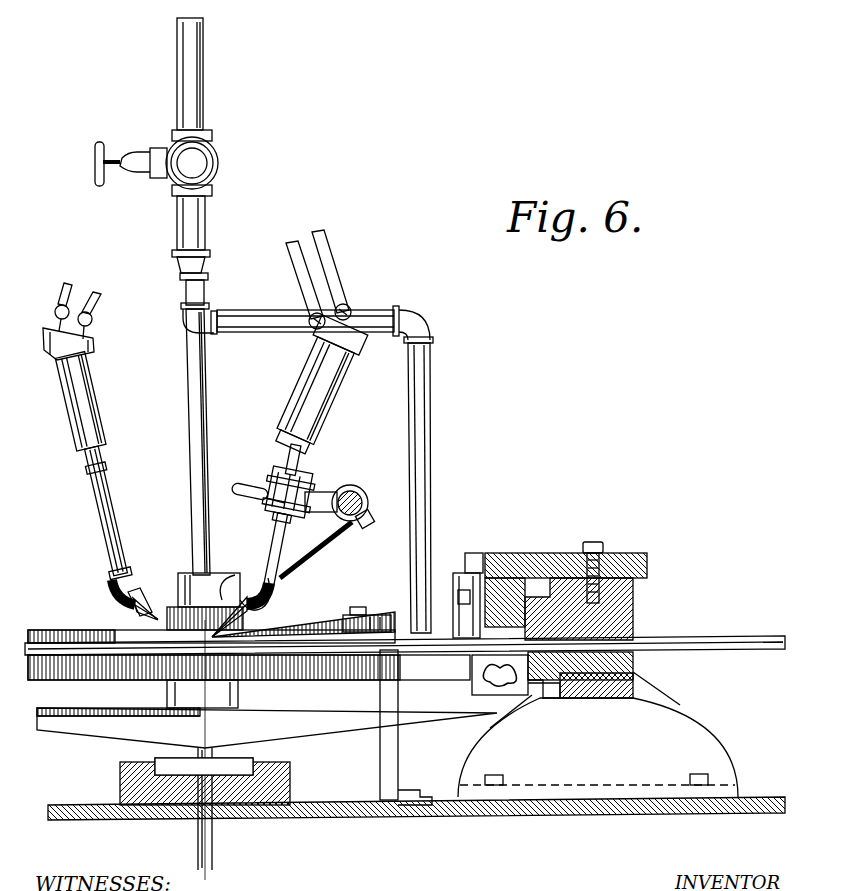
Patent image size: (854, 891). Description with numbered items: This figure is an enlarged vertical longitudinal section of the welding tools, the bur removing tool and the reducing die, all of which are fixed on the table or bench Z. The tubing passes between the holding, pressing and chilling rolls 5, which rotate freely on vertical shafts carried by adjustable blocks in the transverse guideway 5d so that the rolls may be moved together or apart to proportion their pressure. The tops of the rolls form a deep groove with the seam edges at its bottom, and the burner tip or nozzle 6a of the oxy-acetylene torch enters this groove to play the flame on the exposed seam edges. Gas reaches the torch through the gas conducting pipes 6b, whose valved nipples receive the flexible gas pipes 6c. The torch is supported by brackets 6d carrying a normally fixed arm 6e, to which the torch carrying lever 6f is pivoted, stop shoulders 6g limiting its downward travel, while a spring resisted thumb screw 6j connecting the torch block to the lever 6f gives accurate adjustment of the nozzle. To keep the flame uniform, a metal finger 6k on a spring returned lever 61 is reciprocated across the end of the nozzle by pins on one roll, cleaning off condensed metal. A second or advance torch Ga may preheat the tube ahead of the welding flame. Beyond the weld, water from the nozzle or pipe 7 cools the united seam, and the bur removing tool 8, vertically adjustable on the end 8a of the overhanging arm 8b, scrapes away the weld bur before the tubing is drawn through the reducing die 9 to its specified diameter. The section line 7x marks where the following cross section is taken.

The holding, pressing and chilling rolls 5 is at (84, 630).
The transverse guideway 5d is at (120, 790).
The burner tip or nozzle 6a is at (196, 572).
The gas conducting pipes 6b is at (290, 540).
The flexible gas pipes 6c is at (345, 288).
The brackets 6d is at (300, 572).
The normally fixed arm 6e is at (351, 489).
The torch carrying lever 6f is at (314, 486).
The stop shoulders 6g is at (340, 540).
The spring resisted thumb screw 6j is at (270, 500).
The metal finger 6k is at (294, 646).
The spring returned lever 61 is at (367, 620).
The nozzle or pipe 7 is at (424, 463).
The section line 7x is at (196, 383).
The bur removing tool 8 is at (453, 573).
The end of the arm 8a is at (495, 597).
The arm 8b is at (565, 553).
The reducing die 9 is at (594, 542).
The second or advance torch Ga is at (82, 432).
The table or bench Z is at (335, 818).